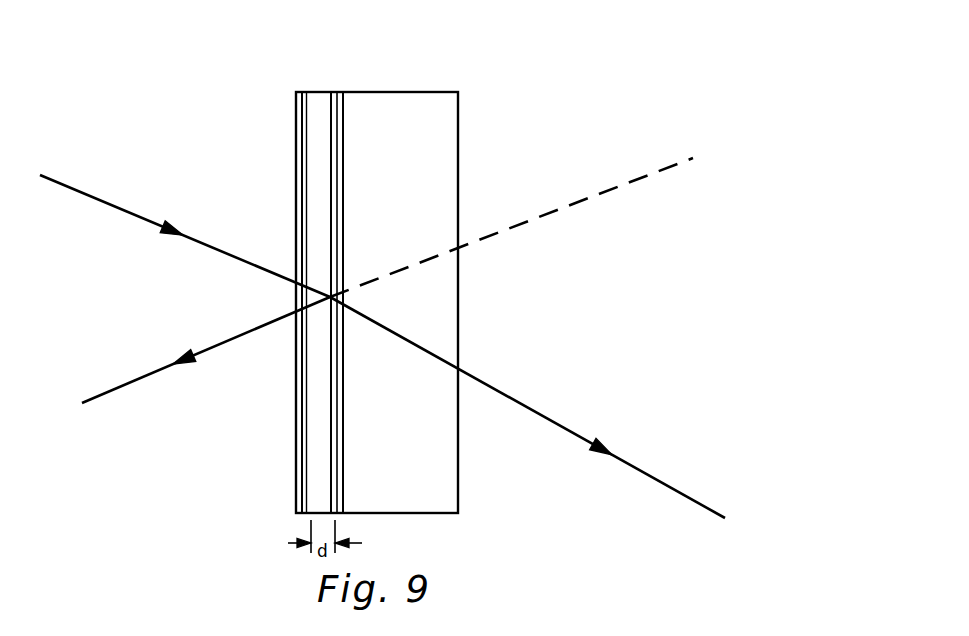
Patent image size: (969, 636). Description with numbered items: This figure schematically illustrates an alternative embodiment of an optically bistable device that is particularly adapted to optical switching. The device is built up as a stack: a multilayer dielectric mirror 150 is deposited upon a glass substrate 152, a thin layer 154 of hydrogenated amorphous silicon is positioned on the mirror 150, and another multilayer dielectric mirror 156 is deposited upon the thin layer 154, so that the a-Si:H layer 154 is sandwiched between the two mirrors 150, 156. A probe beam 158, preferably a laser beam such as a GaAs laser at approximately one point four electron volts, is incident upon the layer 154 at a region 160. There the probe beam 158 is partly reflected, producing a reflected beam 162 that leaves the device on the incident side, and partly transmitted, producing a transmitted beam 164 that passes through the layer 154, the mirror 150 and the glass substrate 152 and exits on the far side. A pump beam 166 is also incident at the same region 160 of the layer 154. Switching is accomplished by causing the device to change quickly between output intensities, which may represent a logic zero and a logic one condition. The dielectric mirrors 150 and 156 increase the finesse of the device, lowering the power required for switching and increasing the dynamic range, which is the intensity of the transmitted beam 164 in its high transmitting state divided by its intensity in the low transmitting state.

The multilayer dielectric mirror 150 is at (340, 100).
The glass substrate 152 is at (413, 108).
The thin layer of a-Si:H 154 is at (320, 107).
The multilayer dielectric mirror 156 is at (295, 112).
The probe beam 158 is at (100, 197).
The region 160 is at (317, 297).
The reflected beam 162 is at (137, 380).
The transmitted beam 164 is at (553, 421).
The pump beam 166 is at (610, 187).